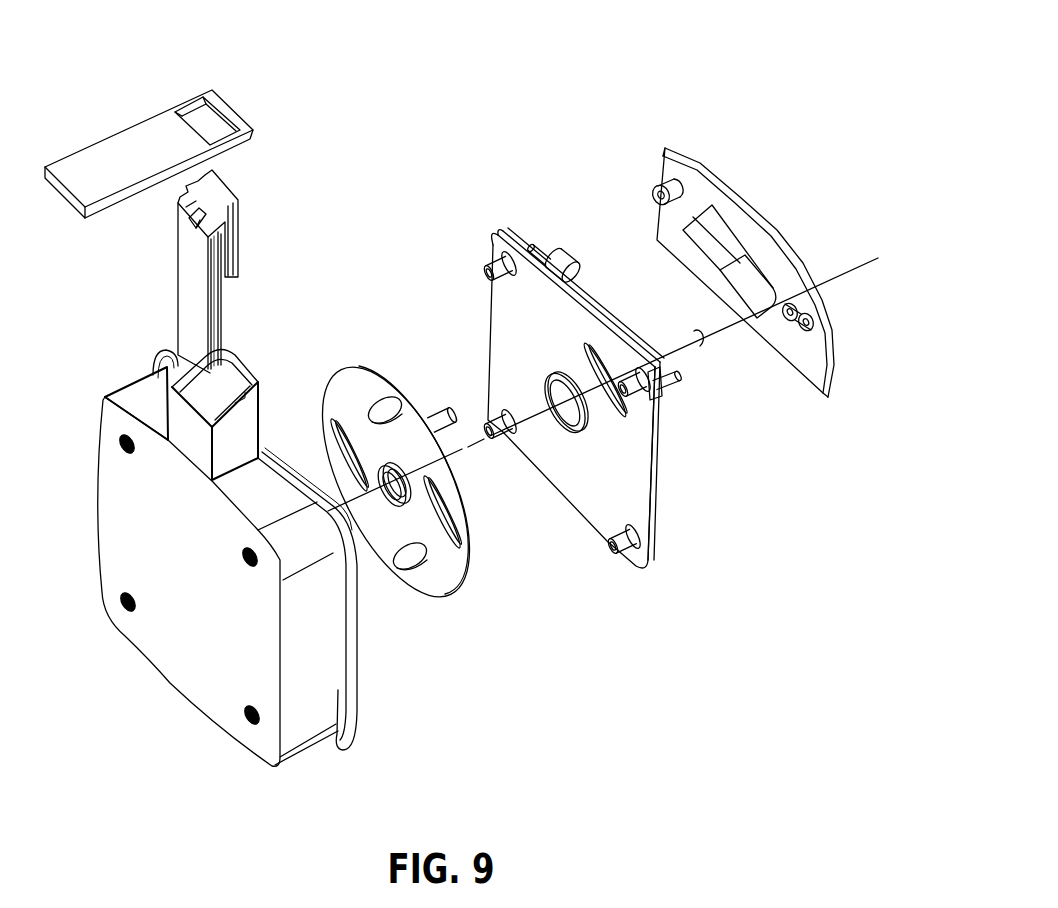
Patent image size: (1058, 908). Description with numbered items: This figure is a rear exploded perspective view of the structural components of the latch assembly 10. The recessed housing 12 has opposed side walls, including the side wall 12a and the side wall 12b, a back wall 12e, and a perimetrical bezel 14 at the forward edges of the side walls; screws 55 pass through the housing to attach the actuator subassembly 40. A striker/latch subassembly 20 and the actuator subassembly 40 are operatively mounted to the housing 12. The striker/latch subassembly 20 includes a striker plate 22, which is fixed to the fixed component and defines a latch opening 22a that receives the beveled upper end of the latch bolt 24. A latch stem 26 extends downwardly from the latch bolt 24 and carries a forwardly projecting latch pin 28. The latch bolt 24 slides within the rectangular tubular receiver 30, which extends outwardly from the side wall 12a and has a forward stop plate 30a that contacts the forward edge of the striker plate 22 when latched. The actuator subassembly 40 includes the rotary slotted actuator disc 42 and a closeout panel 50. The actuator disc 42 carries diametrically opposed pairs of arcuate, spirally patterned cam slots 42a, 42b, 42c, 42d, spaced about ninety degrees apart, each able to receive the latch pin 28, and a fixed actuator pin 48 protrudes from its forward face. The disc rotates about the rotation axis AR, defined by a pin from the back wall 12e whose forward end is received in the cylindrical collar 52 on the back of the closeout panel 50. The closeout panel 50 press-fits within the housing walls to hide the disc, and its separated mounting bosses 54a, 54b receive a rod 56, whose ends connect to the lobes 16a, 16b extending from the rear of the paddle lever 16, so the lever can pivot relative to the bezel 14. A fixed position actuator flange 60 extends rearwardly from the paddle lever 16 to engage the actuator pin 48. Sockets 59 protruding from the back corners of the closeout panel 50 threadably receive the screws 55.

The latch assembly 10 is at (575, 103).
The recessed housing 12 is at (170, 683).
The side wall 12a is at (284, 505).
The side wall 12b is at (329, 644).
The back wall 12e is at (211, 592).
The perimetrical bezel 14 is at (355, 694).
The paddle lever 16 is at (813, 363).
The lobe 16a is at (833, 323).
The lobe 16b is at (653, 190).
The striker/latch subassembly 20 is at (267, 93).
The striker plate 22 is at (111, 172).
The latch opening 22a is at (193, 108).
The latch bolt 24 is at (187, 207).
The latch stem 26 is at (185, 302).
The latch pin 28 is at (230, 312).
The rectangular tubular receiver 30 is at (220, 452).
The forward stop plate 30a is at (237, 382).
The actuator subassembly 40 is at (710, 542).
The rotary slotted actuator disc 42 is at (376, 534).
The cam slot 42a is at (385, 398).
The cam slot 42b is at (450, 517).
The cam slot 42c is at (425, 565).
The cam slot 42d is at (332, 455).
The fixed actuator pin 48 is at (436, 418).
The closeout panel 50 is at (586, 474).
The cylindrical collar 52 is at (547, 377).
The mounting boss 54a is at (667, 390).
The mounting boss 54b is at (563, 258).
The screws 55 is at (121, 446).
The rod 56 is at (588, 295).
The sockets 59 is at (490, 262).
The fixed position actuator flange 60 is at (766, 272).
The rotation axis AR is at (697, 338).